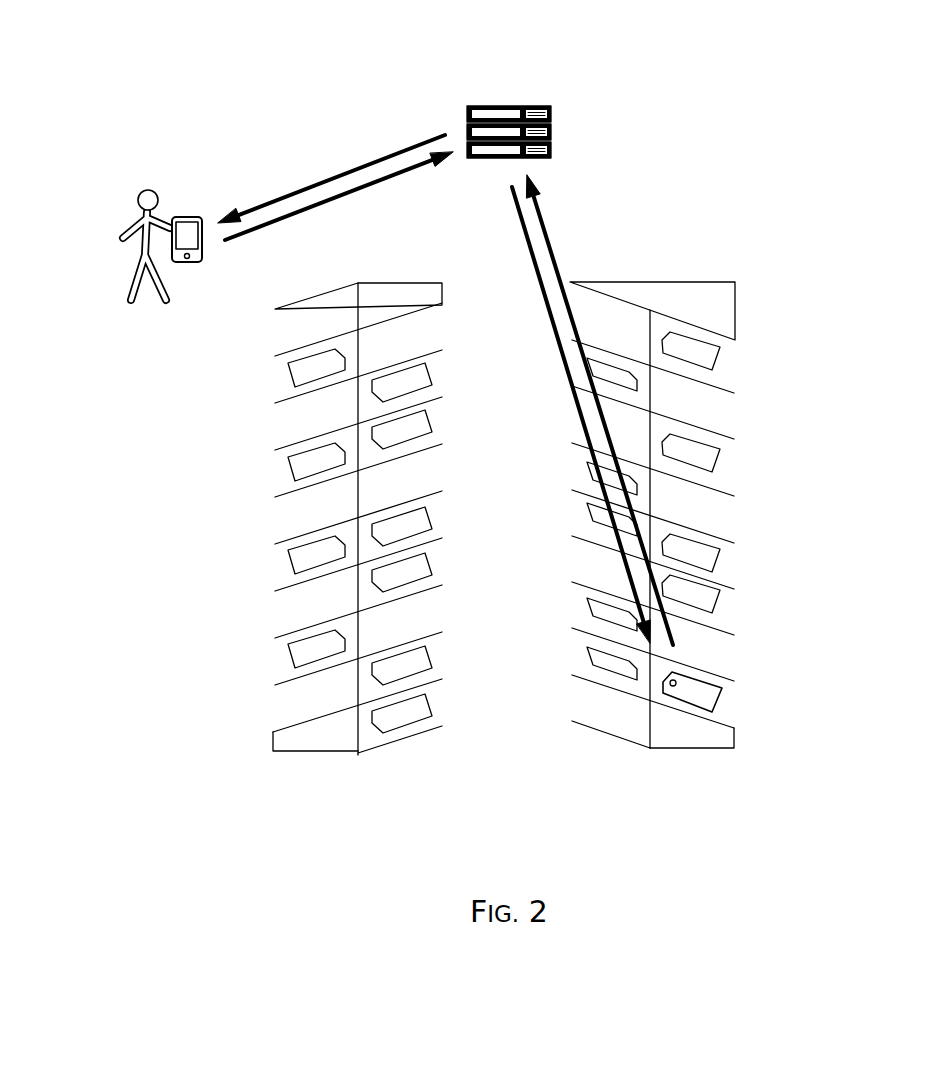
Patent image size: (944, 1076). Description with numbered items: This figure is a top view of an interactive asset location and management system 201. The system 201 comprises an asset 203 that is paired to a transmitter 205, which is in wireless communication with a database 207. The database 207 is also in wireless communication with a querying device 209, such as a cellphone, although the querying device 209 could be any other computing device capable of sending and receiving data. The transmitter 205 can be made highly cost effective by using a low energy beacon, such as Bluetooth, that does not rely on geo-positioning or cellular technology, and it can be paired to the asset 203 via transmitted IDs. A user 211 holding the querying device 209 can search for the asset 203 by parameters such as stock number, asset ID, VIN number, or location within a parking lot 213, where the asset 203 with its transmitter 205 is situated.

The interactive asset location and management system 201 is at (145, 54).
The asset 203 is at (722, 702).
The transmitter 205 is at (677, 683).
The database 207 is at (553, 112).
The querying device 209 is at (187, 217).
The user 211 is at (132, 197).
The parking lot 213 is at (777, 249).